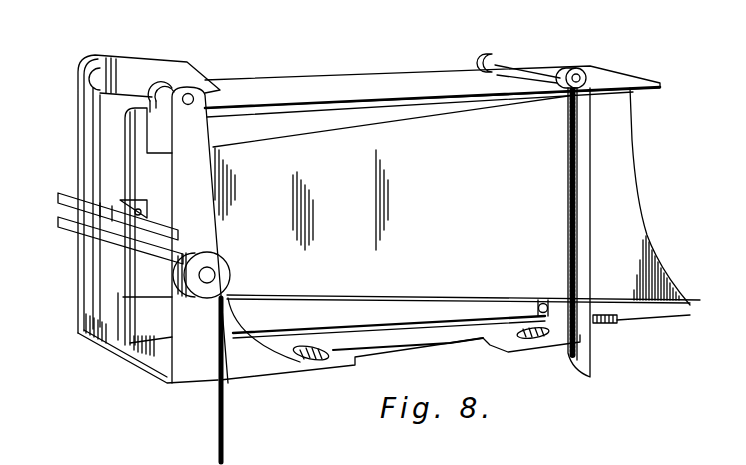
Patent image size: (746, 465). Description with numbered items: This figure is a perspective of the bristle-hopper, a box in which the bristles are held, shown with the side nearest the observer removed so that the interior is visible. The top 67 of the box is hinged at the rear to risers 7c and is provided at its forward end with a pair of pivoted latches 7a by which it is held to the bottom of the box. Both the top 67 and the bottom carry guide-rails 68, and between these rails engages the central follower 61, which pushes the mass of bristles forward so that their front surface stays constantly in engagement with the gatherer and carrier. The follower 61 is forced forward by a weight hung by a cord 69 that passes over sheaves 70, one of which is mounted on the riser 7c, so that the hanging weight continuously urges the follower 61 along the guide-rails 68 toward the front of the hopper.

The riser 7c is at (78, 135).
The pivoted latch 7a is at (592, 165).
The follower 61 is at (335, 199).
The top 67 is at (432, 85).
The guide-rails 68 is at (456, 222).
The cord 69 is at (226, 416).
The sheaves 70 is at (207, 298).